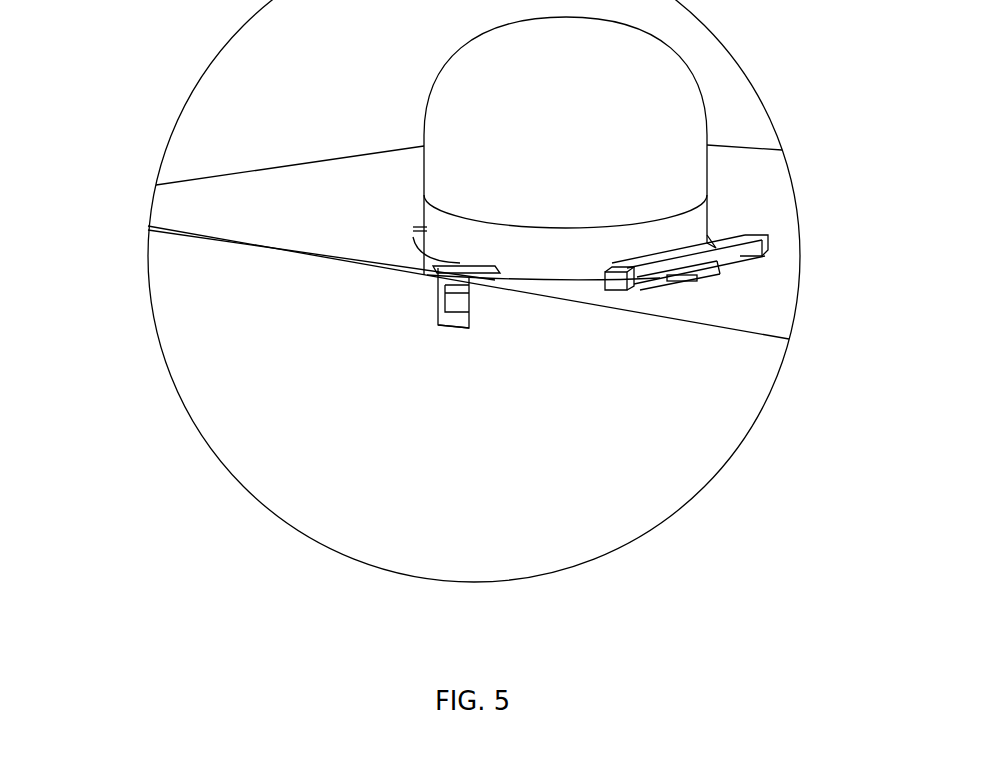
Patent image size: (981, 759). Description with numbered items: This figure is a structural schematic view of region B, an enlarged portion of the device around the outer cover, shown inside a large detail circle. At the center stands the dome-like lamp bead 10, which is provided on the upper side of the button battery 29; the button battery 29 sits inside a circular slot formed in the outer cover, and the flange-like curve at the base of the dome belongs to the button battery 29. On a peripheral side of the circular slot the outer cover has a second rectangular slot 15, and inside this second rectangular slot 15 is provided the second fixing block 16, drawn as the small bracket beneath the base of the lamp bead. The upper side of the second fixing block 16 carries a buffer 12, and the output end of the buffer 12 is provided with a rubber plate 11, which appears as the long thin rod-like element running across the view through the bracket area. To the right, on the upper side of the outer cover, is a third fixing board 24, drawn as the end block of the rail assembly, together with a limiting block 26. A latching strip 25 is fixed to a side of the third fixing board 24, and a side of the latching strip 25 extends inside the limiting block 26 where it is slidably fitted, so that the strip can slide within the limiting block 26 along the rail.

The lamp bead 10 is at (503, 192).
The rubber plate 11 is at (148, 227).
The buffer 12 is at (440, 288).
The second rectangular slot 15 is at (438, 285).
The second fixing block 16 is at (438, 318).
The third fixing board 24 is at (633, 285).
The latching strip 25 is at (730, 266).
The limiting block 26 is at (747, 252).
The button battery 29 is at (473, 260).
The region B is at (730, 460).